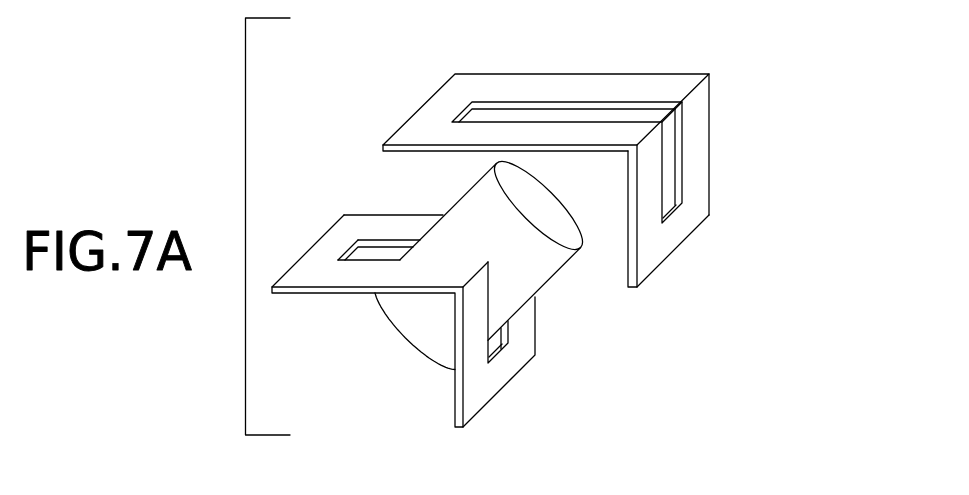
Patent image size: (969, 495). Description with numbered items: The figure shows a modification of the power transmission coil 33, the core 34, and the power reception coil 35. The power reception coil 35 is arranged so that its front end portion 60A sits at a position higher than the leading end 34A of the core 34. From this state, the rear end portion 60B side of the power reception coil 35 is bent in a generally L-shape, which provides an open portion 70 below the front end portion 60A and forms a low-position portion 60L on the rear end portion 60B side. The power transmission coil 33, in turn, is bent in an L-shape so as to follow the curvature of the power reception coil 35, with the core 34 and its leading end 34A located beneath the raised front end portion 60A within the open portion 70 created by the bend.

The power transmission coil 33 is at (332, 294).
The core 34 is at (538, 273).
The leading end 34A is at (567, 227).
The power reception coil 35 is at (622, 73).
The front end portion 60A is at (433, 97).
The rear end portion 60B is at (680, 246).
The low-position portion 60L is at (716, 153).
The open portion 70 is at (403, 163).